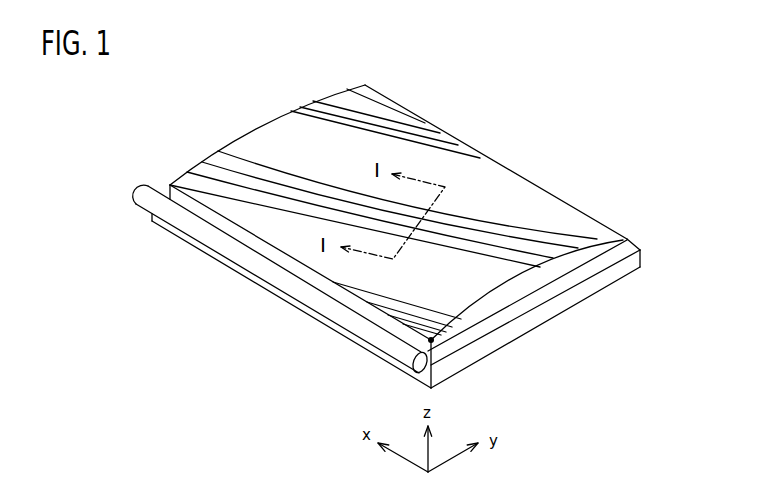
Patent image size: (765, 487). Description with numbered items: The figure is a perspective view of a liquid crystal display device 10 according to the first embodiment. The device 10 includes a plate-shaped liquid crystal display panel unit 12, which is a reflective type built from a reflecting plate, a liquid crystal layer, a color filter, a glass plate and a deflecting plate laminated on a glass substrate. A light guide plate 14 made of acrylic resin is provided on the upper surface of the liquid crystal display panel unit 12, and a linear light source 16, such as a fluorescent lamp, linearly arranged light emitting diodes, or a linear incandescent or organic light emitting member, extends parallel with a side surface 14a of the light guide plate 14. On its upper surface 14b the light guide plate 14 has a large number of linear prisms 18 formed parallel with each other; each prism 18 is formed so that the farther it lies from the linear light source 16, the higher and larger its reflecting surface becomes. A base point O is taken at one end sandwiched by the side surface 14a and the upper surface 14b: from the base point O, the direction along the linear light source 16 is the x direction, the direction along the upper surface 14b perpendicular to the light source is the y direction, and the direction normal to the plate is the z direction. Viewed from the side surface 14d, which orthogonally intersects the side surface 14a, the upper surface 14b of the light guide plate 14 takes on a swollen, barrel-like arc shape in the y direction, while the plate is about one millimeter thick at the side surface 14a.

The liquid crystal display device 10 is at (248, 382).
The liquid crystal display panel unit 12 is at (540, 318).
The light guide plate 14 is at (508, 168).
The side surface 14a is at (256, 244).
The upper surface 14b is at (282, 130).
The side surface 14d is at (547, 275).
The linear light source 16 is at (283, 283).
The linear prisms 18 is at (231, 160).
The base point O is at (433, 342).